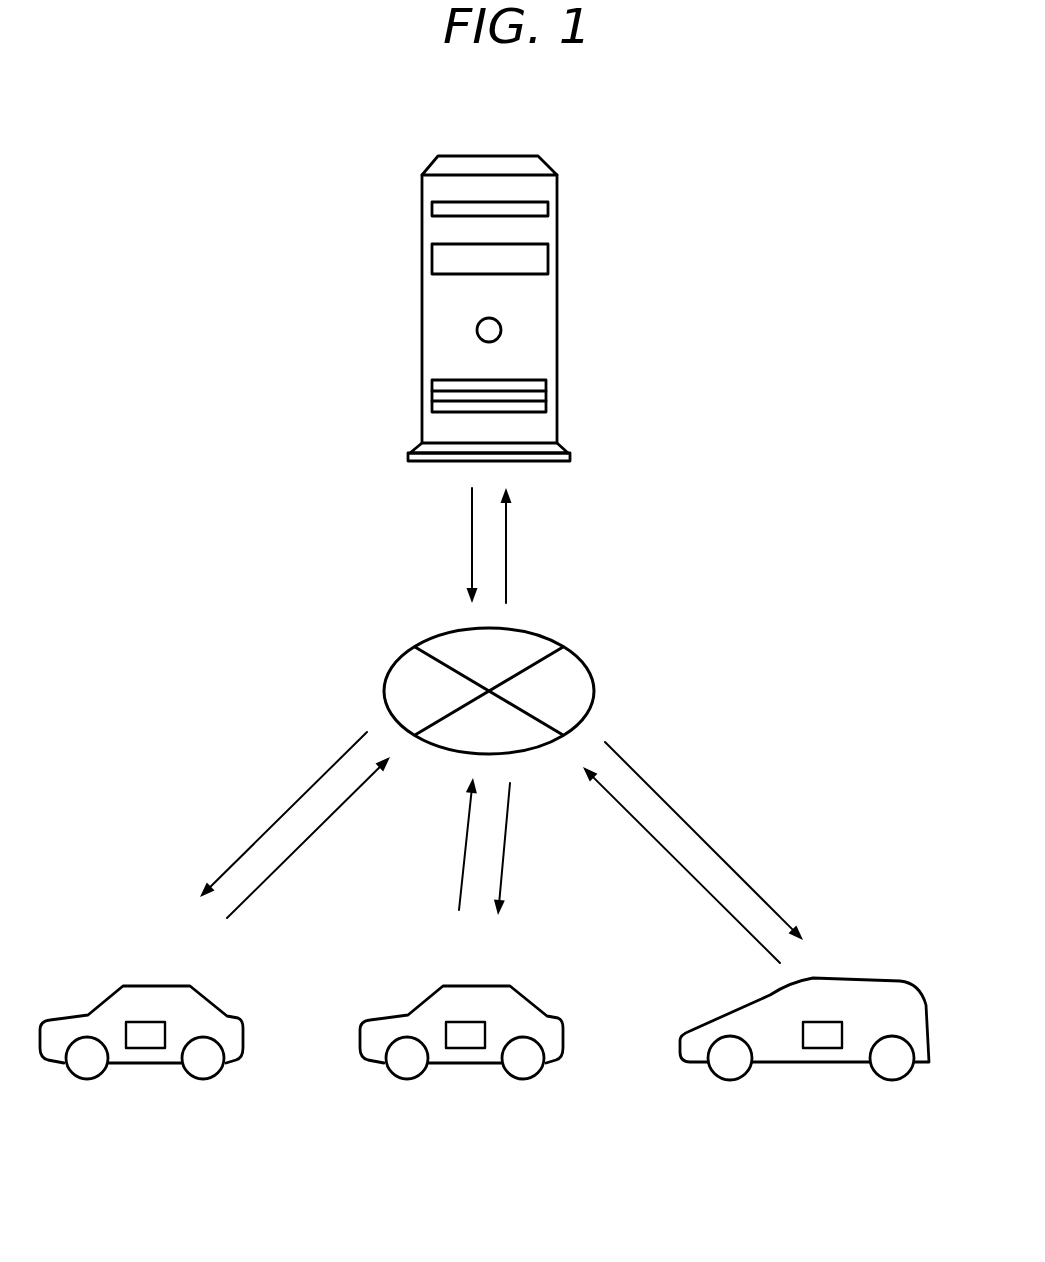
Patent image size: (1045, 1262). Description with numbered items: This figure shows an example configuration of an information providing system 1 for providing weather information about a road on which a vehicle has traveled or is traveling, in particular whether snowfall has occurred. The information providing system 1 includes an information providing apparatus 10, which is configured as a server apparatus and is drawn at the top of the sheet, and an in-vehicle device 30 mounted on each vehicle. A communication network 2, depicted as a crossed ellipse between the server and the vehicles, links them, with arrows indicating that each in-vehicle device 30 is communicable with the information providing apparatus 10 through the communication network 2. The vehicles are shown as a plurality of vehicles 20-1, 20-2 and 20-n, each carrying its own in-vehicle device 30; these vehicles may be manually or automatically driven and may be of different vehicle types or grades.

The information providing system 1 is at (749, 201).
The information providing apparatus 10 is at (515, 156).
The communication network 2 is at (575, 653).
The vehicle 20-1 is at (143, 986).
The vehicle 20-2 is at (475, 986).
The vehicle 20-n is at (877, 978).
The in-vehicle device 30 is at (148, 1048).